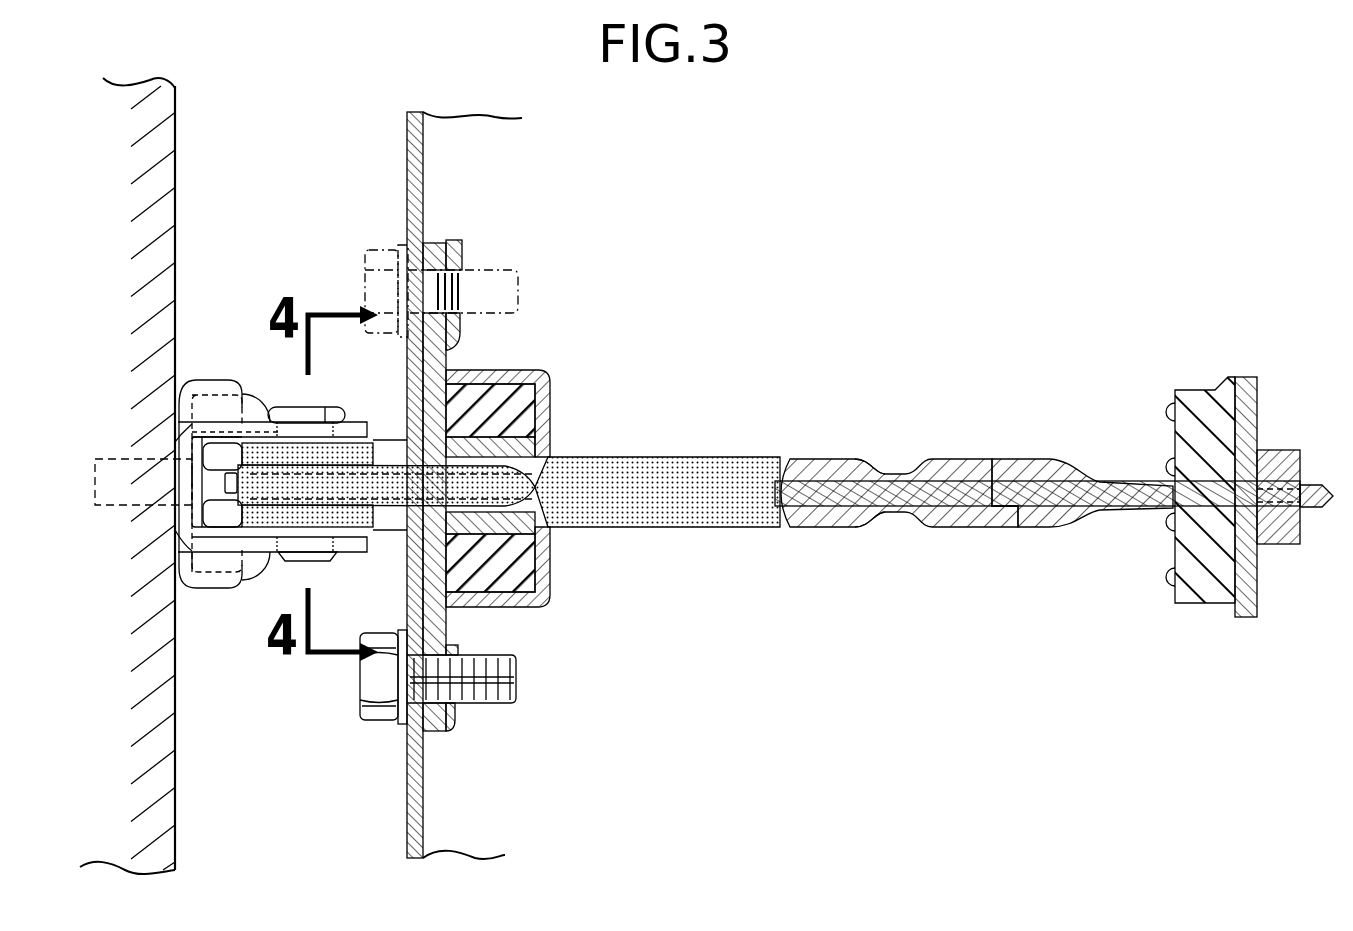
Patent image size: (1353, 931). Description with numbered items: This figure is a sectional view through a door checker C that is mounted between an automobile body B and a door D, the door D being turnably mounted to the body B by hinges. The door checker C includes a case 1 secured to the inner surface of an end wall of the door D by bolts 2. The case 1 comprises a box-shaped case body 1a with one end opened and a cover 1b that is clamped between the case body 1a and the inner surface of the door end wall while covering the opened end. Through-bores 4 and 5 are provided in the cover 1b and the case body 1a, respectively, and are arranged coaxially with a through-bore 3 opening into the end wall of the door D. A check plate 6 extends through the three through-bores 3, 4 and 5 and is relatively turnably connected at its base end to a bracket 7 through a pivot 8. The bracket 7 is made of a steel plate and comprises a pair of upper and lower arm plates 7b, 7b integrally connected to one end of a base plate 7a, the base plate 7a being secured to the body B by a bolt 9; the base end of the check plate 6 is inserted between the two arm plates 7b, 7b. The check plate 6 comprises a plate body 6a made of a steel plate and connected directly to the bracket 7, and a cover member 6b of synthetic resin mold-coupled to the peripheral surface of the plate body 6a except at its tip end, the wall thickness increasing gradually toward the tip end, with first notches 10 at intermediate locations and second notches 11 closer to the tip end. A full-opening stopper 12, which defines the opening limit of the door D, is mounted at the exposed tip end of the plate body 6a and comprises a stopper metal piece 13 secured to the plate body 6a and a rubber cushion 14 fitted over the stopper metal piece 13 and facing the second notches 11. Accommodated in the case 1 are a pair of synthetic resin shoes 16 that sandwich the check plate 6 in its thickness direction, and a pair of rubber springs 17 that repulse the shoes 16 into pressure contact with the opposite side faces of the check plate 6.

The body B is at (178, 118).
The door D is at (404, 180).
The door checker C is at (1059, 455).
The case 1 is at (512, 474).
The case body 1a is at (498, 372).
The cover 1b is at (430, 243).
The bolts 2 is at (362, 289).
The through-bore 3 is at (404, 440).
The through-bore 4 is at (396, 528).
The through-bore 5 is at (548, 450).
The check plate 6 is at (977, 561).
The plate body 6a is at (938, 528).
The cover member 6b is at (994, 533).
The bracket 7 is at (205, 378).
The base plate 7a is at (203, 583).
The arm plates 7b is at (322, 423).
The pivot 8 is at (298, 407).
The bolt 9 is at (112, 508).
The first notches 10 is at (873, 470).
The second notches 11 is at (1080, 470).
The full-opening stopper 12 is at (1192, 612).
The stopper metal piece 13 is at (1247, 423).
The rubber cushion 14 is at (1203, 388).
The shoes 16 is at (509, 485).
The rubber springs 17 is at (536, 400).